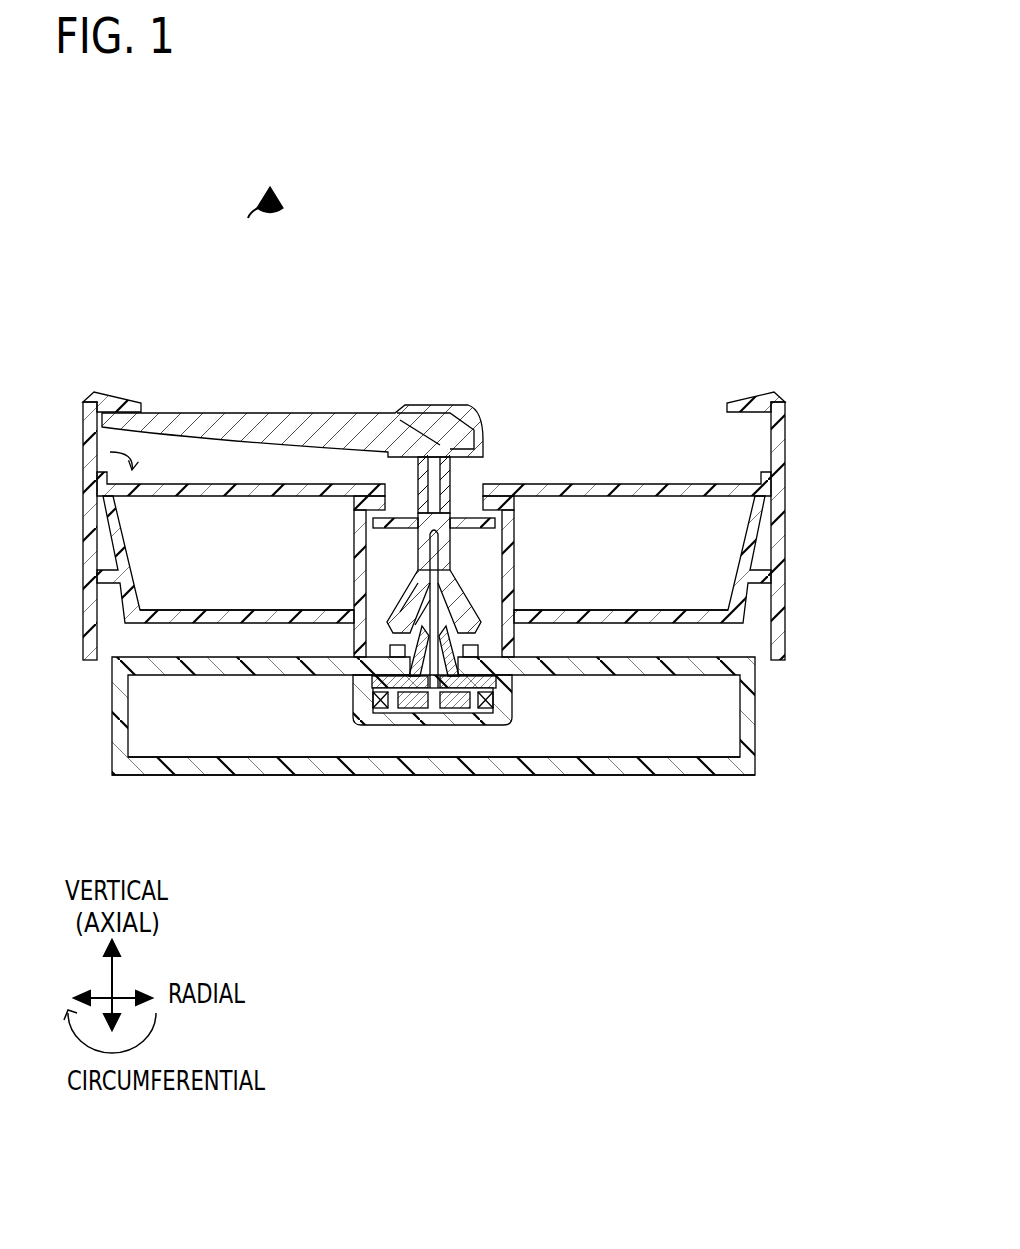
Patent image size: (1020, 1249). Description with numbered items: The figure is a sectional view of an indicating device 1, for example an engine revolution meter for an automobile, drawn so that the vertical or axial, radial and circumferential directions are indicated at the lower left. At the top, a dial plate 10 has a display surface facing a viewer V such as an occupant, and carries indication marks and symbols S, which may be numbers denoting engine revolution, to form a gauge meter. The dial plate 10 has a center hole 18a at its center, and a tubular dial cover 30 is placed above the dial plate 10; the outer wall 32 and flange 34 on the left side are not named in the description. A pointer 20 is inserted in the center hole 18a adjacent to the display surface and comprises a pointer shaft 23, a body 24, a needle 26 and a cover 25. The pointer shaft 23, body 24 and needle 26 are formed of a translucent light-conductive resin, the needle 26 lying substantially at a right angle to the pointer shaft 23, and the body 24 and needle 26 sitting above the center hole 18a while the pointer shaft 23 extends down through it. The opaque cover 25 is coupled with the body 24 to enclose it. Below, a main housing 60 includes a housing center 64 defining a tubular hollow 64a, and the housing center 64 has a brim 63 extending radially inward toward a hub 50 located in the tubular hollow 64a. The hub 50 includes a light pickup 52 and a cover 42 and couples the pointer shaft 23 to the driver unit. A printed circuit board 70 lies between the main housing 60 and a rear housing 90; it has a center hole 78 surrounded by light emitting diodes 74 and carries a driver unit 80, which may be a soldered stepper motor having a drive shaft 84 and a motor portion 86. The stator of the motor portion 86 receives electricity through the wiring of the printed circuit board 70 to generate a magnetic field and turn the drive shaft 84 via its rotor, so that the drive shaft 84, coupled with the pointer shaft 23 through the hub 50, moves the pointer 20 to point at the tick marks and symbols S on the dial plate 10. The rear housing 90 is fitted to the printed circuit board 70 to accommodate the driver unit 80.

The indicating device 1 is at (816, 317).
The dial plate 10 is at (752, 472).
The center hole 18a is at (479, 486).
The pointer 20 is at (497, 438).
The pointer shaft 23 is at (418, 470).
The body 24 is at (427, 424).
The cover 25 is at (427, 422).
The needle 26 is at (307, 414).
The dial cover 30 is at (752, 383).
The cover side wall 32 is at (82, 534).
The cover flange 34 is at (98, 403).
The cover 42 is at (376, 521).
The hub 50 is at (390, 537).
The light pickup 52 is at (407, 595).
The main housing 60 is at (777, 668).
The brim 63 is at (490, 505).
The housing center 64 is at (507, 547).
The tubular hollow 64a is at (372, 610).
The printed circuit board 70 is at (732, 680).
The light emitting diodes 74 is at (390, 650).
The center hole 78 is at (497, 685).
The driver unit 80 is at (503, 730).
The drive shaft 84 is at (427, 700).
The motor portion 86 is at (450, 706).
The rear housing 90 is at (739, 777).
The symbols S is at (96, 457).
The viewer V is at (283, 195).